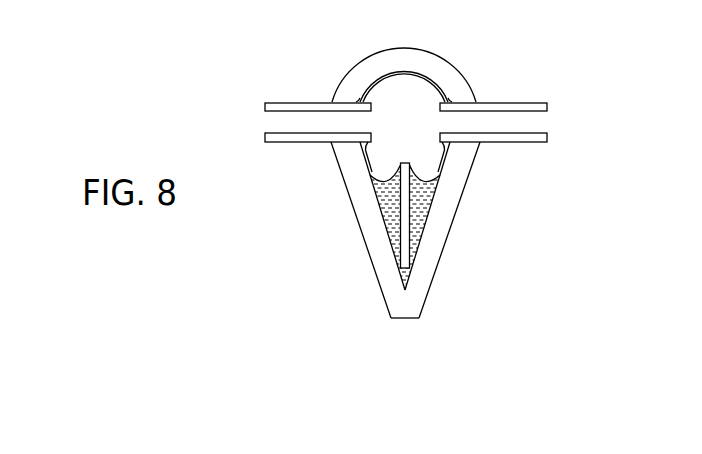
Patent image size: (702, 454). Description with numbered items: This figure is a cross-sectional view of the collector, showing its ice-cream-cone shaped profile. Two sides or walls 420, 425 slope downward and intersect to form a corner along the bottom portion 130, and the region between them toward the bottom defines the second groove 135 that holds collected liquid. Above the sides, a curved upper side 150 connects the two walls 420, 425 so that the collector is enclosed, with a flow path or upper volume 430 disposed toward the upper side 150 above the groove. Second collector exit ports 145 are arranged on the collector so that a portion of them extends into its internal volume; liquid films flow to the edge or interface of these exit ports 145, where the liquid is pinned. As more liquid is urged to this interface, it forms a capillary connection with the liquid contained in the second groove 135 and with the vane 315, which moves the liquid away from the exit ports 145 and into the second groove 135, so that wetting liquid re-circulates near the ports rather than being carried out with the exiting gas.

The bottom portion 130 is at (405, 290).
The second groove 135 is at (436, 198).
The second collector exit ports 145 is at (297, 103).
The upper side 150 is at (415, 50).
The vane 315 is at (395, 243).
The side 420 is at (350, 197).
The side 425 is at (443, 247).
The upper volume 430 is at (405, 95).